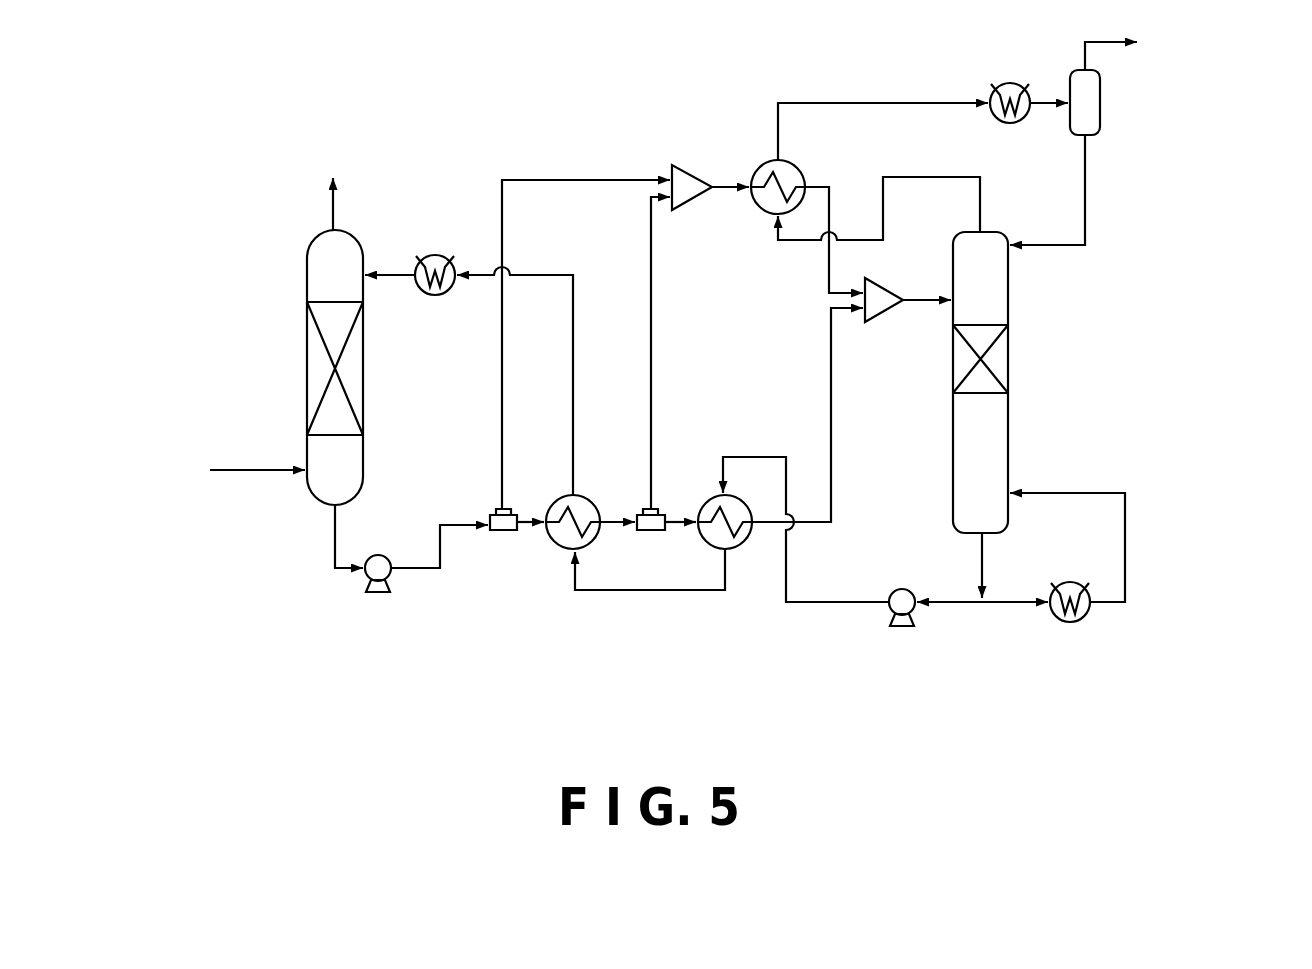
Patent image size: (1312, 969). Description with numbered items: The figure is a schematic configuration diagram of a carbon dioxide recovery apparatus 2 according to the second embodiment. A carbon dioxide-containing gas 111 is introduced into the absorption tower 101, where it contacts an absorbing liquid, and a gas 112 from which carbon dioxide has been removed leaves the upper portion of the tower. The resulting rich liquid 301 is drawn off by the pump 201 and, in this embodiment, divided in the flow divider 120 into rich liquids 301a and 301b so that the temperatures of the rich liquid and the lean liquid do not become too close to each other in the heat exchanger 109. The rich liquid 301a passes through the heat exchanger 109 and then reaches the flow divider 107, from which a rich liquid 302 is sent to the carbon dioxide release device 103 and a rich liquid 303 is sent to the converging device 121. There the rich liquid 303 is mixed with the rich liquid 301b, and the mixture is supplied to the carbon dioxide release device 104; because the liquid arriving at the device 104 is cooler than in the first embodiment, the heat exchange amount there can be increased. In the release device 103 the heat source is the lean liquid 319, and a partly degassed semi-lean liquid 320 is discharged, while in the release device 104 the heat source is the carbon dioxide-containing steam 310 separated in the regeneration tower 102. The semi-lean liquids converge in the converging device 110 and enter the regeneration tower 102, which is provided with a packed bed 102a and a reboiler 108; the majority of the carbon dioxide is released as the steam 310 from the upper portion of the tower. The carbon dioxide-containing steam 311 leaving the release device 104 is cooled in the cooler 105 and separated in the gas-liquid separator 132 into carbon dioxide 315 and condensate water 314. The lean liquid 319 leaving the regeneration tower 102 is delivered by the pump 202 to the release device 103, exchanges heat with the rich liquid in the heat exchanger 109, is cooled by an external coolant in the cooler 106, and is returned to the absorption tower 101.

The carbon dioxide recovery apparatus 2 is at (671, 366).
The absorption tower 101 is at (307, 290).
The regeneration tower 102 is at (1029, 415).
The packed bed 102a is at (1009, 358).
The carbon dioxide release device 103 is at (742, 544).
The carbon dioxide release device 104 is at (760, 164).
The cooler 105 is at (1010, 125).
The cooler 106 is at (430, 253).
The flow divider 107 is at (650, 535).
The reboiler 108 is at (1077, 621).
The heat exchanger 109 is at (598, 505).
The converging device 110 is at (883, 311).
The carbon dioxide-containing gas 111 is at (250, 468).
The gas from which carbon dioxide has been removed 112 is at (332, 210).
The flow divider 120 is at (502, 533).
The converging device 121 is at (693, 200).
The gas-liquid separator 132 is at (1100, 103).
The pump 201 is at (378, 555).
The pump 202 is at (897, 588).
The rich liquid 301 is at (420, 572).
The rich liquid 301a is at (527, 512).
The rich liquid 301b is at (500, 378).
The rich liquid 302 is at (677, 512).
The rich liquid 303 is at (655, 390).
The carbon dioxide-containing steam 310 is at (910, 177).
The carbon dioxide-containing steam 311 is at (833, 102).
The condensate water 314 is at (1086, 210).
The carbon dioxide 315 is at (1085, 40).
The lean liquid 319 is at (398, 278).
The semi-lean liquid 320 is at (833, 421).